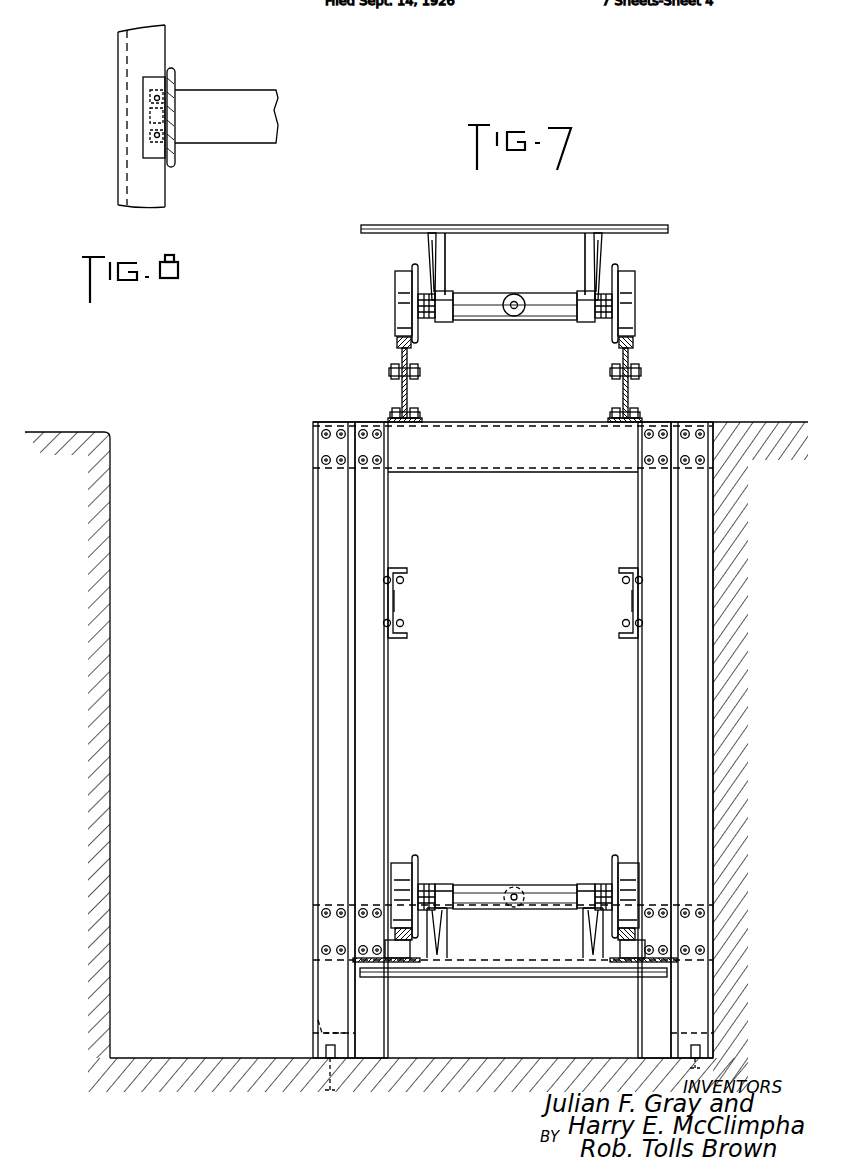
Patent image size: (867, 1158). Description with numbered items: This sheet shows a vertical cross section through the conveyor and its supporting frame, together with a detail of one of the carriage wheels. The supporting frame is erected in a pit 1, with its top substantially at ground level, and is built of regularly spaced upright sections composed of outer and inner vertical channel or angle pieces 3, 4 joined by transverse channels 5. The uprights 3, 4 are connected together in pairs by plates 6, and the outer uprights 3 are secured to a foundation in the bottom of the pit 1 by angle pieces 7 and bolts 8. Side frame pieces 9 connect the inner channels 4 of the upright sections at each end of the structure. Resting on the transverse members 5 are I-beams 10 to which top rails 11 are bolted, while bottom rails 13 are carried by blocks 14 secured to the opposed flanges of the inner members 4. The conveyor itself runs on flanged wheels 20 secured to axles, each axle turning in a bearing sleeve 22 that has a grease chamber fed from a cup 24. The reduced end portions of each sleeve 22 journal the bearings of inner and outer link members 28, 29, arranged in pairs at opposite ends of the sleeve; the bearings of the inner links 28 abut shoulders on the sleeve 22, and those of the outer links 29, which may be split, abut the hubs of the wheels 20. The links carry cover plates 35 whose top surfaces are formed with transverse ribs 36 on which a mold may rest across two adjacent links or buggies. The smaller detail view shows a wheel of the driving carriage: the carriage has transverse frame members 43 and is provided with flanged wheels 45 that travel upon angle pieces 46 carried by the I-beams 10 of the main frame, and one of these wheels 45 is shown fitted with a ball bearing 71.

In FIG. 7, the pit 1 is at (110, 843).
In FIG. 7, the outer vertical channel or angle pieces 3 is at (323, 703).
In FIG. 7, the inner vertical channel or angle pieces 4 is at (375, 707).
In FIG. 7, the transverse channels 5 is at (515, 455).
In FIG. 7, the plates 6 is at (332, 960).
In FIG. 7, the angle pieces 7 is at (310, 1013).
In FIG. 7, the bolts 8 is at (335, 1073).
In FIG. 7, the side frame pieces 9 is at (392, 600).
In FIG. 7, the I-beams 10 is at (408, 393).
In FIG. 7, the top rails 11 is at (395, 353).
In FIG. 7, the bottom rails 13 is at (417, 947).
In FIG. 7, the blocks 14 is at (397, 962).
In FIG. 7, the flanged wheels 20 is at (398, 285).
In FIG. 7, the sleeve 22 is at (483, 303).
In FIG. 7, the cup 24 is at (511, 313).
In FIG. 7, the inner link members 28 is at (426, 247).
In FIG. 7, the outer link members 29 is at (443, 247).
In FIG. 7, the cover plates 35 is at (532, 233).
In FIG. 7, the transverse ribs 36 is at (556, 225).
In FIG. 8, the transverse frame members 43 is at (230, 100).
In FIG. 8, the flanged wheels 45 is at (155, 82).
In FIG. 8, the angle pieces 46 is at (133, 178).
In FIG. 8, the ball bearing 71 is at (150, 134).